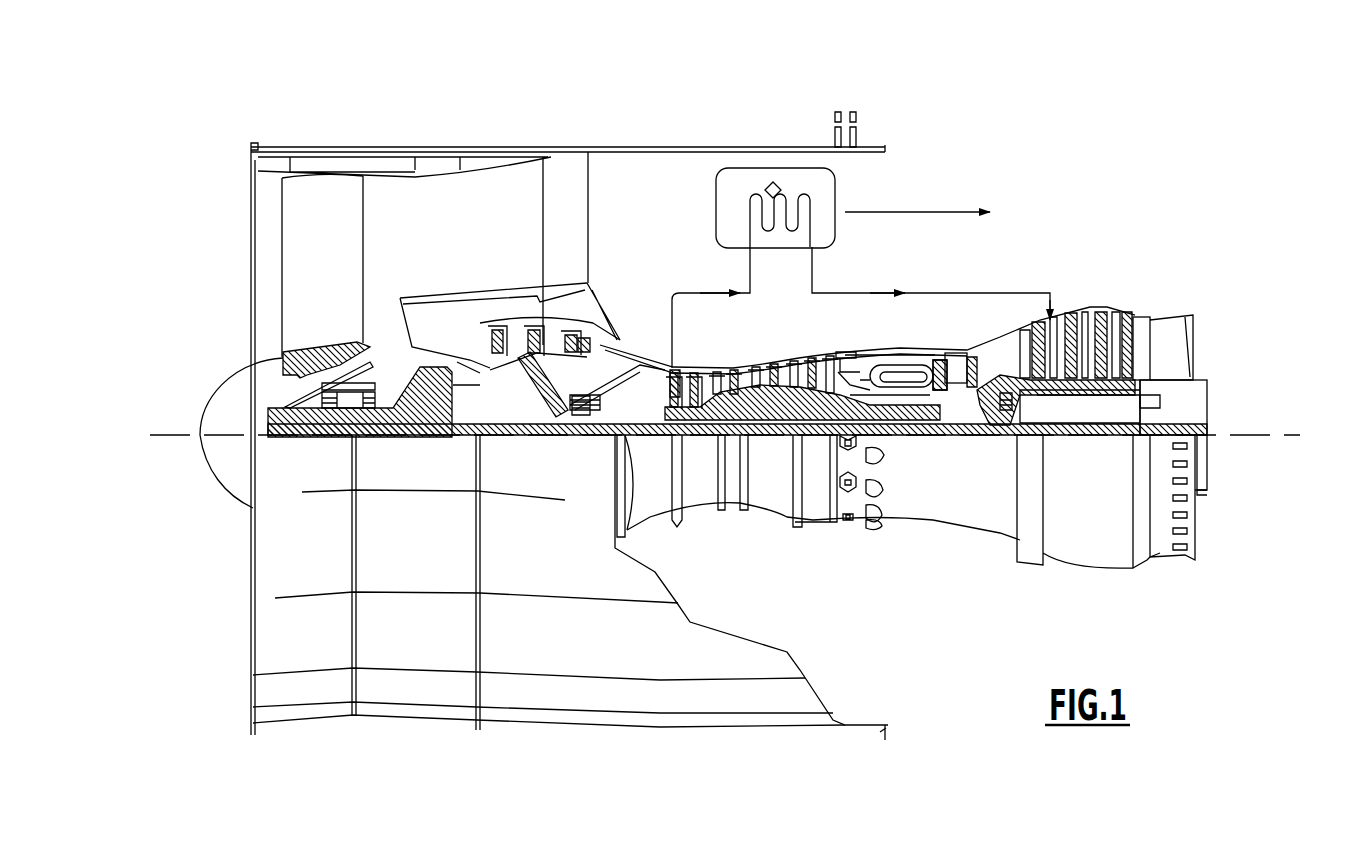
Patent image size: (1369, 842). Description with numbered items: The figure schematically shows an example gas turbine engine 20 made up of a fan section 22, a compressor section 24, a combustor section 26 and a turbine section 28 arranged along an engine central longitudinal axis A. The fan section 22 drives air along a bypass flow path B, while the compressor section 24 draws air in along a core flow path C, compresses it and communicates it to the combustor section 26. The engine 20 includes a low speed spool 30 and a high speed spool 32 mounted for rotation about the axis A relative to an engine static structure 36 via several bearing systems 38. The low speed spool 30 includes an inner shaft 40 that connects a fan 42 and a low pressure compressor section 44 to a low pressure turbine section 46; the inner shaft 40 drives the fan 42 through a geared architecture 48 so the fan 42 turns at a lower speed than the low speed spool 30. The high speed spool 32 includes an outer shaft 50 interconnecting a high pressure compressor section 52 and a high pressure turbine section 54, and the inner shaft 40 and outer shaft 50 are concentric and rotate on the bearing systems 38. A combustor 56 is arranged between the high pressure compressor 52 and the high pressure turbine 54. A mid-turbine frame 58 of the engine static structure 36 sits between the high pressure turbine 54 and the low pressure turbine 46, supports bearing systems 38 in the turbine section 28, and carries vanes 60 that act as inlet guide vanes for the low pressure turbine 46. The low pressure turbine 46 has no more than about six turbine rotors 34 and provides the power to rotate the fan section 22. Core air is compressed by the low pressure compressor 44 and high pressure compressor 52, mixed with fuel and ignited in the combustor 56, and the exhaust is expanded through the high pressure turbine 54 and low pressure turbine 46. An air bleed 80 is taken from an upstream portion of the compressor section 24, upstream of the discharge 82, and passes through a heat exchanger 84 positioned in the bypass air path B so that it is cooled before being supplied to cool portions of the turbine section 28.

The gas turbine engine 20 is at (893, 200).
The fan section 22 is at (462, 120).
The compressor section 24 is at (475, 262).
The combustor section 26 is at (885, 262).
The turbine section 28 is at (1150, 262).
The low speed spool 30 is at (773, 445).
The high speed spool 32 is at (812, 407).
The turbine rotors 34 is at (1093, 393).
The engine static structure 36 is at (814, 528).
The bearing systems 38 is at (1010, 393).
The inner shaft 40 is at (637, 436).
The fan 42 is at (340, 281).
The low pressure compressor section 44 is at (552, 333).
The low pressure turbine section 46 is at (1068, 360).
The geared architecture 48 is at (440, 420).
The outer shaft 50 is at (895, 413).
The high pressure compressor section 52 is at (747, 393).
The high pressure turbine section 54 is at (953, 353).
The combustor 56 is at (890, 377).
The mid-turbine frame 58 is at (997, 342).
The vanes 60 is at (993, 370).
The air bleed 80 is at (673, 342).
The discharge 82 is at (833, 380).
The heat exchanger 84 is at (740, 183).